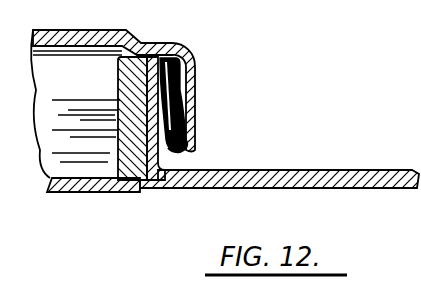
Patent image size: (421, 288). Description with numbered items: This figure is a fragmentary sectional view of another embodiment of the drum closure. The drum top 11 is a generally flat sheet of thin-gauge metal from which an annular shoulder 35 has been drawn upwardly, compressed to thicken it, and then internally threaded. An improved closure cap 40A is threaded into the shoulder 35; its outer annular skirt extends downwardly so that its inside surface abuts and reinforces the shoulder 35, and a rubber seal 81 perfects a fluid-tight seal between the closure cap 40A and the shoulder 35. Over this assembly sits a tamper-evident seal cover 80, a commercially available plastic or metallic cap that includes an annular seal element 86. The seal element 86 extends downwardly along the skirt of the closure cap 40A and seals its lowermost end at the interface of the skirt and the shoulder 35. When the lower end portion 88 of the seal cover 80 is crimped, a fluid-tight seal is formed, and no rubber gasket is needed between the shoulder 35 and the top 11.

The tamper-evident seal cover 80 is at (195, 52).
The rubber seal 81 is at (150, 67).
The seal element 86 is at (178, 82).
The lower end portion 88 is at (183, 143).
The top 11 is at (256, 190).
The closure cap 40A is at (122, 76).
The annular shoulder 35 is at (145, 128).